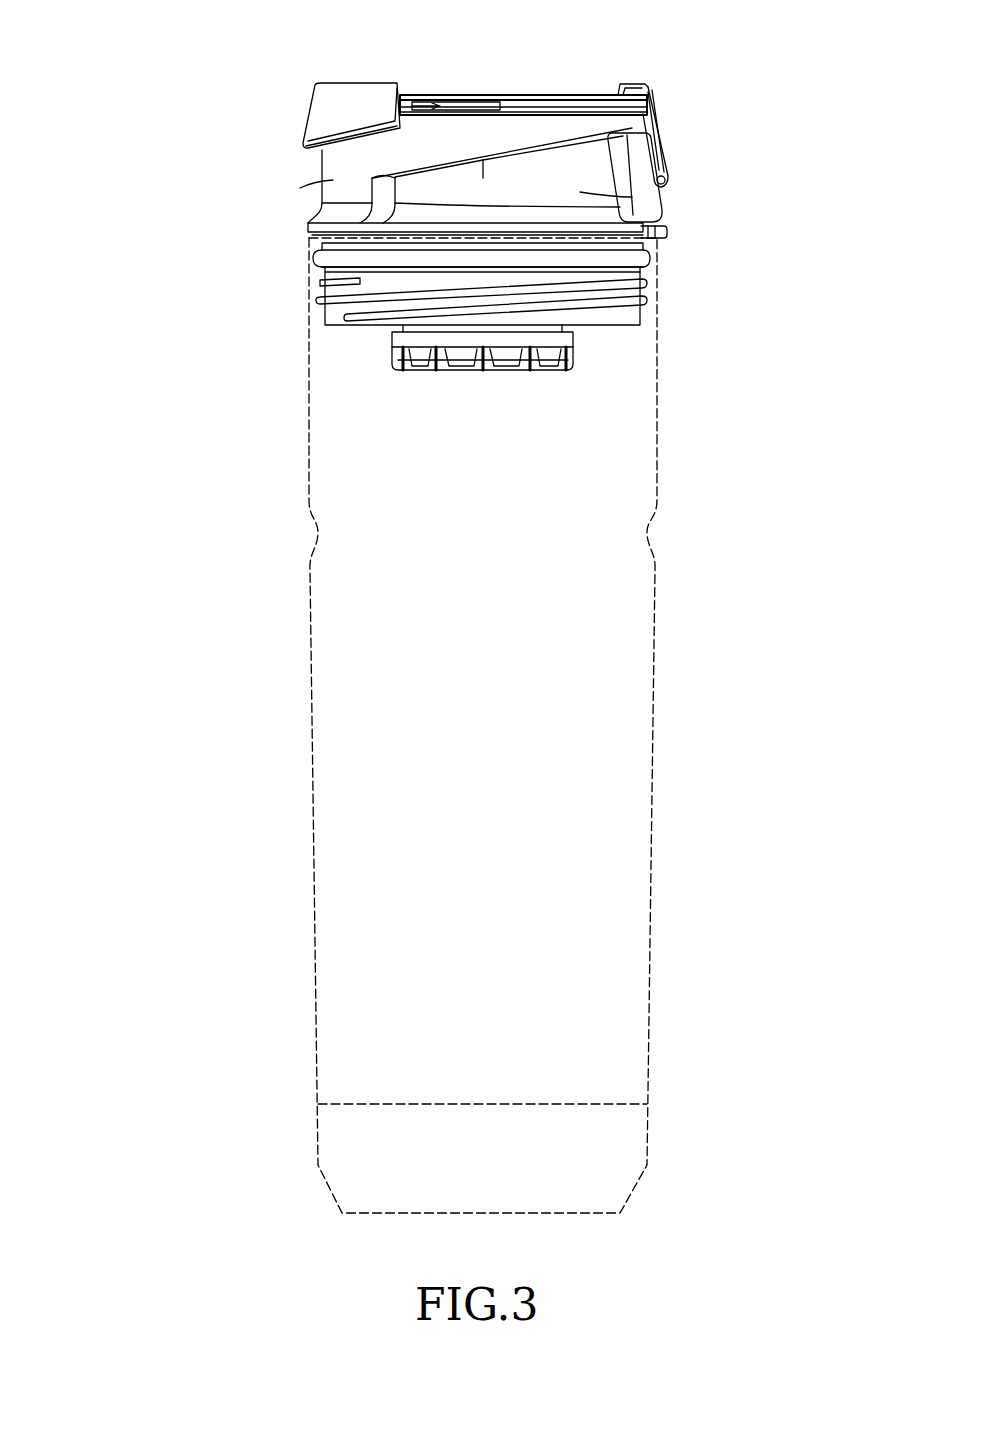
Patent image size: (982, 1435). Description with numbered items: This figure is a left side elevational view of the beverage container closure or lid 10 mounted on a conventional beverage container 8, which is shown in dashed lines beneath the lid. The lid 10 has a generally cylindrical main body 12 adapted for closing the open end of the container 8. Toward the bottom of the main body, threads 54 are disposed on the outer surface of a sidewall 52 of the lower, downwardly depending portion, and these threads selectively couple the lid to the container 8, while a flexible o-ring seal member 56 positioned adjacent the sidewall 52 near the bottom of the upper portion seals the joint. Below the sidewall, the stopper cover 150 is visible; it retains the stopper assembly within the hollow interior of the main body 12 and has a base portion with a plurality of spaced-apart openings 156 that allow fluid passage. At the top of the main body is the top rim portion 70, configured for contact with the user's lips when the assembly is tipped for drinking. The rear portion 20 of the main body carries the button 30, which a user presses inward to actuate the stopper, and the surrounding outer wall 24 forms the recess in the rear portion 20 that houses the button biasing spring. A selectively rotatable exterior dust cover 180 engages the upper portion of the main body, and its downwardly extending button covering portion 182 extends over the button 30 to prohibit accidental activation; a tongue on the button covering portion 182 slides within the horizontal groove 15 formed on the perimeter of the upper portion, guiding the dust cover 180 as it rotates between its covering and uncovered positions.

The beverage container 8 is at (657, 487).
The lid 10 is at (212, 120).
The main body 12 is at (348, 165).
The groove 15 is at (513, 105).
The rear portion 20 is at (580, 193).
The outer wall 24 is at (668, 230).
The button 30 is at (630, 167).
The sidewall 52 is at (607, 280).
The threads 54 is at (645, 302).
The o-ring seal member 56 is at (643, 258).
The top rim portion 70 is at (527, 98).
The stopper cover 150 is at (411, 341).
The openings 156 is at (458, 357).
The dust cover 180 is at (350, 82).
The button covering portion 182 is at (667, 130).